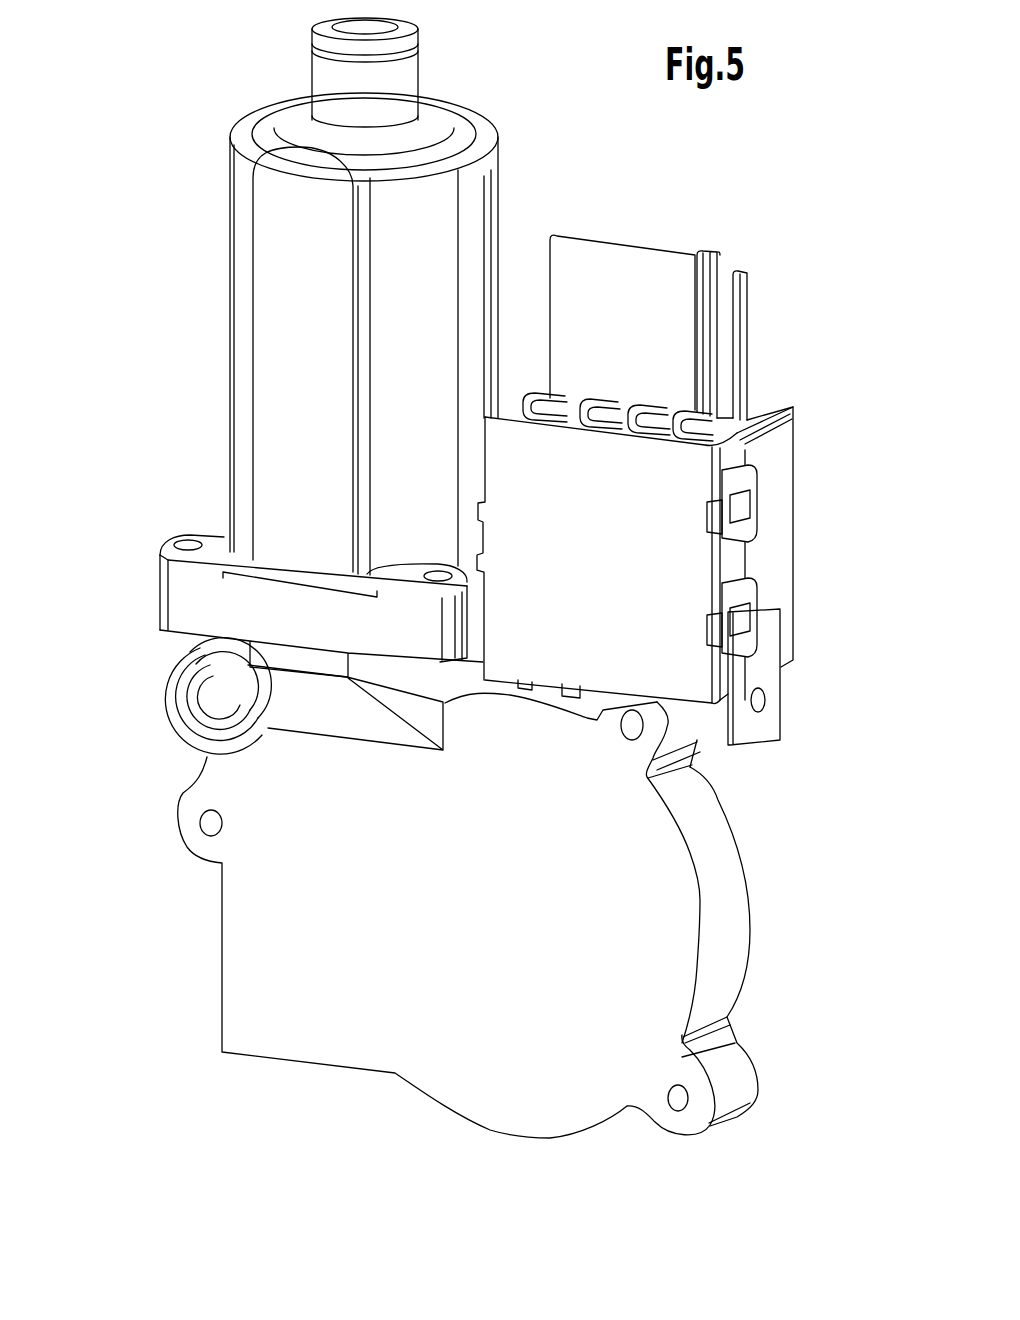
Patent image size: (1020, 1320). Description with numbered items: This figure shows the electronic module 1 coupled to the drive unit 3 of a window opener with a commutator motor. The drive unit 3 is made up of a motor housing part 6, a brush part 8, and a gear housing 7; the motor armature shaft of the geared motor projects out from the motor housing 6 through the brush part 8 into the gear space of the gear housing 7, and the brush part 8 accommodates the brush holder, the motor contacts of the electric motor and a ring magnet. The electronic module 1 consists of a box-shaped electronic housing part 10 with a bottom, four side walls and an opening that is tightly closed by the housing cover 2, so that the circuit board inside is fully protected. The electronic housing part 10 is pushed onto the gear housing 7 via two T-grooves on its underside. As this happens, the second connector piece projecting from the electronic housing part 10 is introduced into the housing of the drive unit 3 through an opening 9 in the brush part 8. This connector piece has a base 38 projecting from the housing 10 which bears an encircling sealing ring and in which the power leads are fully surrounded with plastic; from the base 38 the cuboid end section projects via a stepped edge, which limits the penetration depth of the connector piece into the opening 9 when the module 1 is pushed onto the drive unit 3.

The electronic module 1 is at (778, 388).
The housing cover 2 is at (504, 425).
The drive unit 3 is at (205, 478).
The motor housing part 6 is at (490, 176).
The gear housing 7 is at (693, 940).
The brush part 8 is at (178, 600).
The opening 9 is at (472, 560).
The electronic housing part 10 is at (783, 508).
The base 38 is at (477, 612).